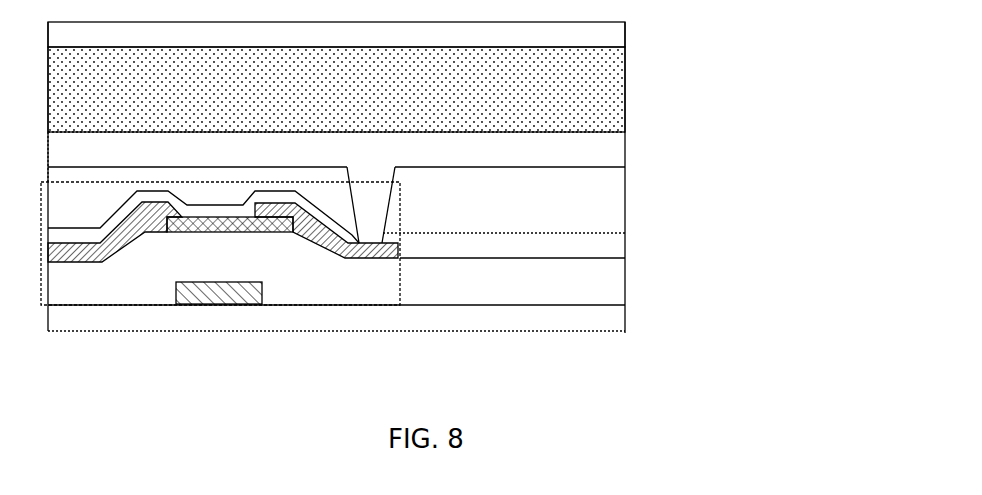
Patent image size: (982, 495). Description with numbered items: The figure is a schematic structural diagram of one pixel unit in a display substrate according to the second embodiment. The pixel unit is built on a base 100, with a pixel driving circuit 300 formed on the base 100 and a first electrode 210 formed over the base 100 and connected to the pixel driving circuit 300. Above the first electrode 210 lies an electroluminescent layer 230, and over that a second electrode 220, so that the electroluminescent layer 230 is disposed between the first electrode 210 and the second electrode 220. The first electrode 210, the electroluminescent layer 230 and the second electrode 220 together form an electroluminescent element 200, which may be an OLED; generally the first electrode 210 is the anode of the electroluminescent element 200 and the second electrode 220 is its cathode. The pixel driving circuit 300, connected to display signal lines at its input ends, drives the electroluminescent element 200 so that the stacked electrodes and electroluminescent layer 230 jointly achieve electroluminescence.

The base 100 is at (593, 321).
The electroluminescent element 200 is at (444, 177).
The first electrode 210 is at (575, 156).
The second electrode 220 is at (570, 38).
The electroluminescent layer 230 is at (580, 92).
The pixel driving circuit 300 is at (148, 283).